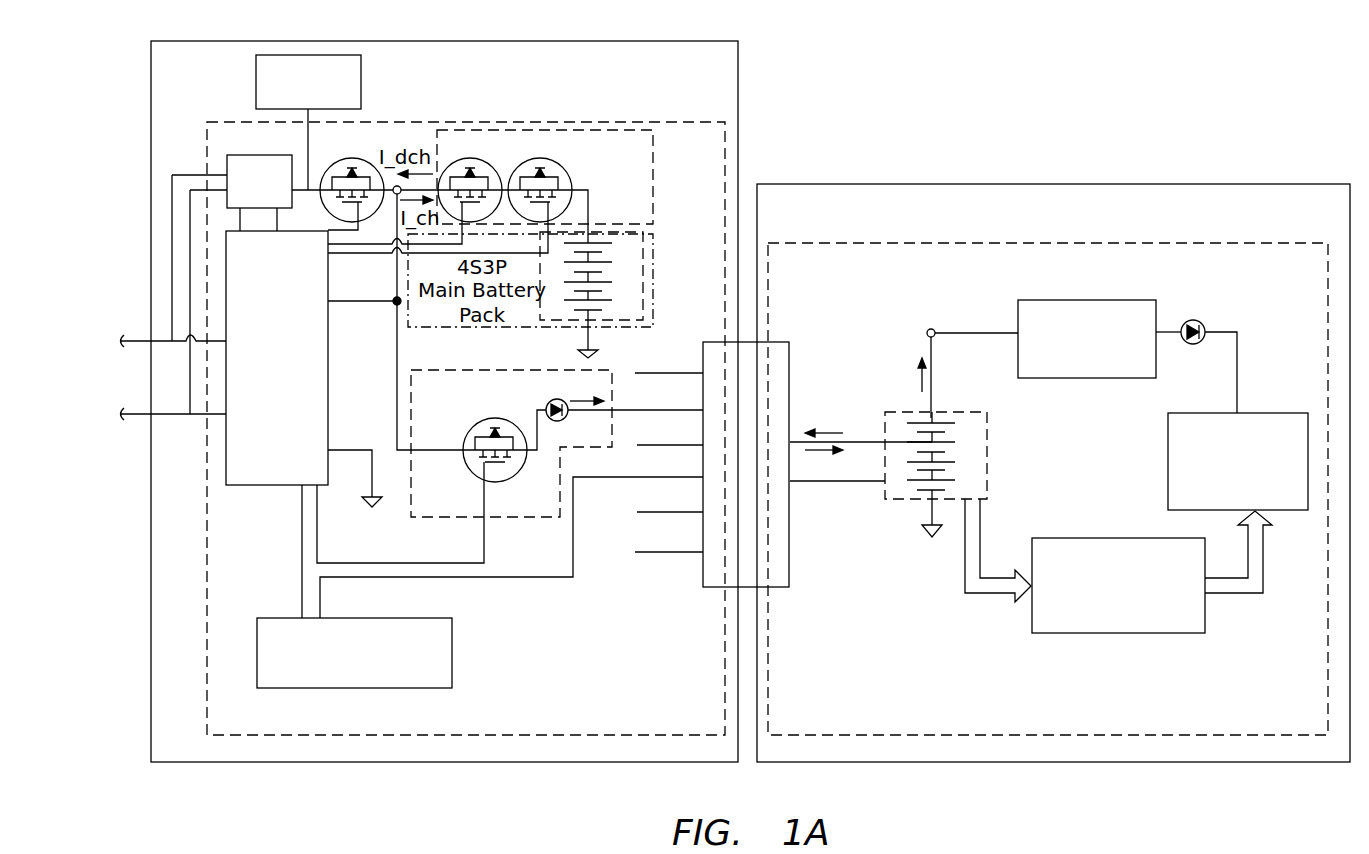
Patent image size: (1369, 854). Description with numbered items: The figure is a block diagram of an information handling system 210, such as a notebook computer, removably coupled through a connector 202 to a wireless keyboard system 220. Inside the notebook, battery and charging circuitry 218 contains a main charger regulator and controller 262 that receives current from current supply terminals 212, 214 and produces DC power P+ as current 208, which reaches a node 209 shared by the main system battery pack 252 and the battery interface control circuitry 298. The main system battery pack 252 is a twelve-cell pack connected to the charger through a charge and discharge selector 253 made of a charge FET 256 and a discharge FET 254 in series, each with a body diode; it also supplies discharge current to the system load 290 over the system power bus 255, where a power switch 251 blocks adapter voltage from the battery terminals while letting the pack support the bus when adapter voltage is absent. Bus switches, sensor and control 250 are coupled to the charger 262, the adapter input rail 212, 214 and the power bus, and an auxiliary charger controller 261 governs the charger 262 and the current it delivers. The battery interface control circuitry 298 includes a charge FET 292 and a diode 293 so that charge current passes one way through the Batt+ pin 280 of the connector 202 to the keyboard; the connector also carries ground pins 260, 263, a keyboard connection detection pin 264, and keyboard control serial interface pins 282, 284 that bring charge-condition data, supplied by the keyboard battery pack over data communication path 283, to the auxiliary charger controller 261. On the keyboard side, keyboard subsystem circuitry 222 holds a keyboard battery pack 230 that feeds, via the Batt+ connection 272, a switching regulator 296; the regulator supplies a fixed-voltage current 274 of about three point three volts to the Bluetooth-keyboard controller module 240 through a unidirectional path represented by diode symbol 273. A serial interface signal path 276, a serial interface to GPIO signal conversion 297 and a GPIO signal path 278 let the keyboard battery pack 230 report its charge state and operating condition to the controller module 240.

The information handling system 210 is at (393, 762).
The wireless keyboard system 220 is at (985, 762).
The battery and charging circuitry 218 is at (427, 122).
The keyboard subsystem circuitry 222 is at (955, 243).
The system load 290 is at (293, 90).
The system power bus 255 is at (305, 148).
The bus switches, sensor and control 250 is at (245, 193).
The current supply terminal 214 is at (142, 336).
The current supply terminal 212 is at (142, 416).
The main charger regulator and controller 262 is at (257, 487).
The power switch 251 is at (355, 158).
The current 208 is at (368, 305).
The node 209 is at (395, 310).
The charge and discharge selector 253 is at (653, 196).
The charge FET switching element 256 is at (498, 170).
The discharge FET switching element 254 is at (572, 182).
The main system battery pack 252 is at (653, 250).
The battery interface control circuitry 298 is at (432, 518).
The charge FET switching element 292 is at (477, 425).
The diode 293 is at (546, 401).
The battery supply pin 280 is at (628, 408).
The ground pin 263 is at (697, 373).
The keyboard connection detection pin 264 is at (640, 447).
The keyboard control serial interface pin 282 is at (628, 478).
The keyboard control serial interface pin 284 is at (637, 513).
The ground pin 260 is at (655, 553).
The connector 202 is at (712, 588).
The auxiliary charger controller 261 is at (340, 690).
The data communication path 283 is at (808, 483).
The keyboard battery pack 230 is at (898, 500).
The Batt+ line 272 is at (950, 333).
The switching regulator 296 is at (1070, 300).
The diode symbol 273 is at (1198, 320).
The current of fixed voltage 274 is at (1238, 360).
The Bluetooth-keyboard controller module 240 is at (1282, 511).
The GPIO signal path 278 is at (1263, 583).
The serial interface to GPIO signal conversion 297 is at (1113, 634).
The serial interface signal path 276 is at (985, 545).